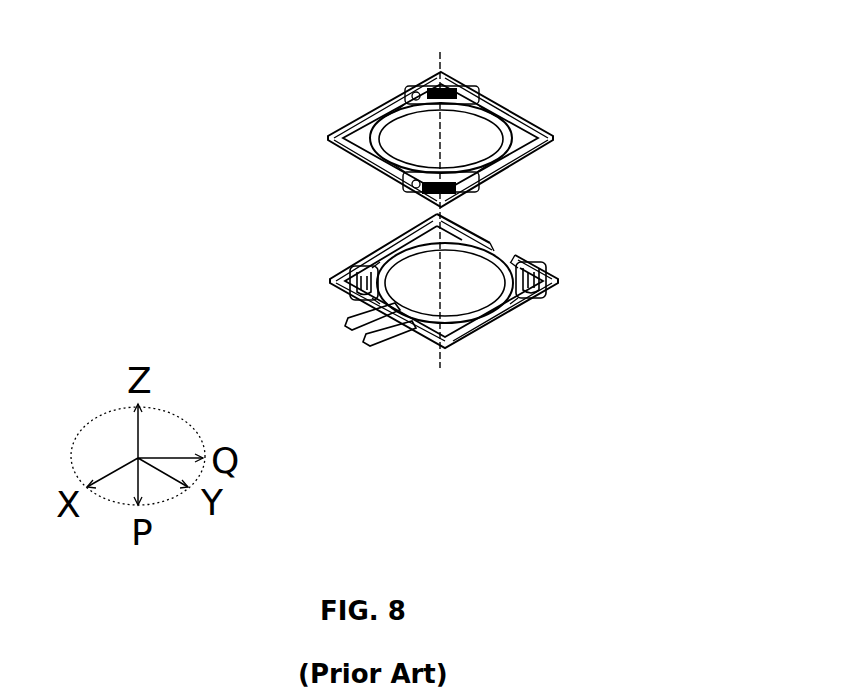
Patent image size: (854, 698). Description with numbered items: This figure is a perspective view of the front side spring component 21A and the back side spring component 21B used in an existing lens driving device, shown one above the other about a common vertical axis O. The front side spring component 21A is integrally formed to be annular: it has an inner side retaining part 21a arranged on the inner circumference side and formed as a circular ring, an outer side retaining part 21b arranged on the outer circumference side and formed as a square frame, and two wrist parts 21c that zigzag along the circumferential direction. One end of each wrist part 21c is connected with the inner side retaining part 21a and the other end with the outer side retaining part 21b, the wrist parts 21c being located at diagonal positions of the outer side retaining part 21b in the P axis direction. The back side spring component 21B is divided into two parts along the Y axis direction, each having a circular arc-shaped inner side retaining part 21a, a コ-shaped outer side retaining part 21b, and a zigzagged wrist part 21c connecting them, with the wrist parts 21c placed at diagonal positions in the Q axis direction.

The optical axis O is at (440, 67).
The front side spring component 21A is at (350, 118).
The back side spring component 21B is at (610, 337).
The inner side retaining part 21a is at (373, 145).
The outer side retaining part 21b is at (480, 93).
The wrist part 21c is at (460, 76).